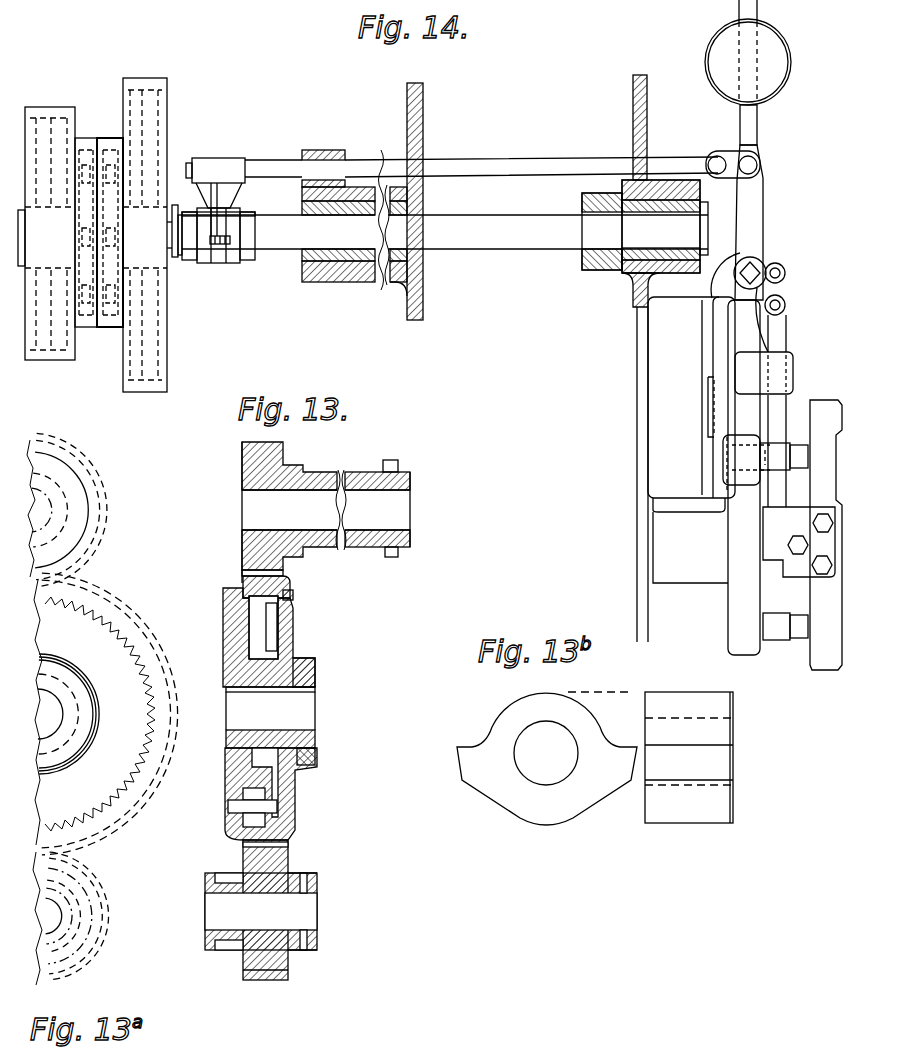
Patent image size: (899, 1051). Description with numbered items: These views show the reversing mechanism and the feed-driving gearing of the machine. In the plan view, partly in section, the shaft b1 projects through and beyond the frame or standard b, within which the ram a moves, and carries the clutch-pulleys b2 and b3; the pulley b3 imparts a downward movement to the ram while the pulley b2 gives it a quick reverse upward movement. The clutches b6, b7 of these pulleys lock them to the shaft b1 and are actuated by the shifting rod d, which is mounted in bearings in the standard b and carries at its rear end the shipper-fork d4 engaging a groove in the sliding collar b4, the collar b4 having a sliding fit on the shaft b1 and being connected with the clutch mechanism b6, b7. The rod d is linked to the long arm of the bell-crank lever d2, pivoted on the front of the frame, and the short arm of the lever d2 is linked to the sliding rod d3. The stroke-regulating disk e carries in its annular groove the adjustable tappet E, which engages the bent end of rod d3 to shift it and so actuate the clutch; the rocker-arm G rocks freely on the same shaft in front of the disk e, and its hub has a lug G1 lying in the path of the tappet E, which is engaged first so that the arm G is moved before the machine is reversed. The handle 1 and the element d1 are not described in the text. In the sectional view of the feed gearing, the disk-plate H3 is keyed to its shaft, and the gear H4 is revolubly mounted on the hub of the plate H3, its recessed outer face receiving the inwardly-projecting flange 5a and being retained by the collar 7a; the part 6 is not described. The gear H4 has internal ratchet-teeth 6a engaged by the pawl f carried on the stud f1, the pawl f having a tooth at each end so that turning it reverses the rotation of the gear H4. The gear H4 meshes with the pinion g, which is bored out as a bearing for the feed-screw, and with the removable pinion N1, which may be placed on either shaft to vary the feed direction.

In FIG. 14, the hand knob 1 is at (738, 74).
In FIG. 14, the clutch-pulley b2 is at (48, 107).
In FIG. 14, the clutch-pulley b3 is at (158, 78).
In FIG. 14, the clutch b6 is at (90, 148).
In FIG. 14, the clutch b7 is at (110, 148).
In FIG. 14, the standard b is at (175, 205).
In FIG. 14, the shaft b1 is at (445, 220).
In FIG. 14, the sliding collar b4 is at (237, 263).
In FIG. 14, the shifting collar d1 is at (217, 215).
In FIG. 14, the shipper-fork d4 is at (225, 158).
In FIG. 14, the shifting rod d is at (502, 156).
In FIG. 14, the bell-crank lever d2 is at (765, 212).
In FIG. 14, the sliding rod d3 is at (790, 332).
In FIG. 14, the stroke-regulating disk e is at (744, 477).
In FIG. 14, the rocker-arm G is at (826, 535).
In FIG. 14, the lug G1 is at (760, 548).
In FIG. 14, the tappet E is at (785, 639).
In FIG. 13, the pinion g is at (315, 512).
In FIG. 13A, the pinion g is at (106, 510).
In FIG. 13, the ram a is at (254, 558).
In FIG. 13, the collar 6 is at (243, 582).
In FIG. 13, the inwardly-projecting flange 5a is at (283, 603).
In FIG. 13, the disk-plate H3 is at (232, 623).
In FIG. 13, the gear H4 is at (293, 627).
In FIG. 13A, the gear H4 is at (106, 714).
In FIG. 13, the collar 7a is at (315, 668).
In FIG. 13, the stud f1 is at (290, 818).
In FIG. 13, the pinion N1 is at (290, 862).
In FIG. 13A, the pinion N1 is at (108, 925).
In FIG. 13A, the internal ratchet-teeth 6a is at (125, 642).
In FIG. 13B, the pawl f is at (595, 758).